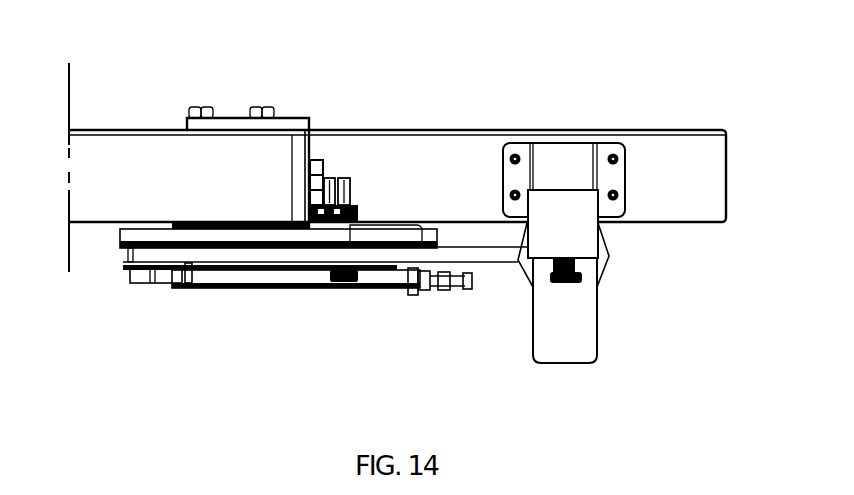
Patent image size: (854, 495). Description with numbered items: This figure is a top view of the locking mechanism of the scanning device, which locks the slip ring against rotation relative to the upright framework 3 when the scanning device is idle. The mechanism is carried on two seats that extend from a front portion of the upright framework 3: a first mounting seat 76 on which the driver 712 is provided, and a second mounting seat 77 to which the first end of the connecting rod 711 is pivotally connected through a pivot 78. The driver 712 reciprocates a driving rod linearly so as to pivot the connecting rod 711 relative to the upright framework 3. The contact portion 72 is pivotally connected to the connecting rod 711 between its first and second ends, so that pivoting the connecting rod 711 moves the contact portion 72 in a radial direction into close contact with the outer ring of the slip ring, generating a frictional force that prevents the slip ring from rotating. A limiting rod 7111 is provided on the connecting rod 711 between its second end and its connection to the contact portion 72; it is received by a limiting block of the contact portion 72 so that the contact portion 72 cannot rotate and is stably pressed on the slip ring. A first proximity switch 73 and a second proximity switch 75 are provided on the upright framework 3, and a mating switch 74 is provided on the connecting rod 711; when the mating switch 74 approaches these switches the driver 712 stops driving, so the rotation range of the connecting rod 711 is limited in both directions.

The upright framework 3 is at (694, 163).
The second mounting seat 77 is at (293, 162).
The first proximity switch 73 is at (323, 162).
The second proximity switch 75 is at (340, 175).
The mating switch 74 is at (352, 207).
The connecting rod 711 is at (290, 254).
The contact portion 72 is at (215, 279).
The pivot 78 is at (143, 273).
The limiting rod 7111 is at (457, 287).
The first mounting seat 76 is at (585, 212).
The driver 712 is at (610, 254).